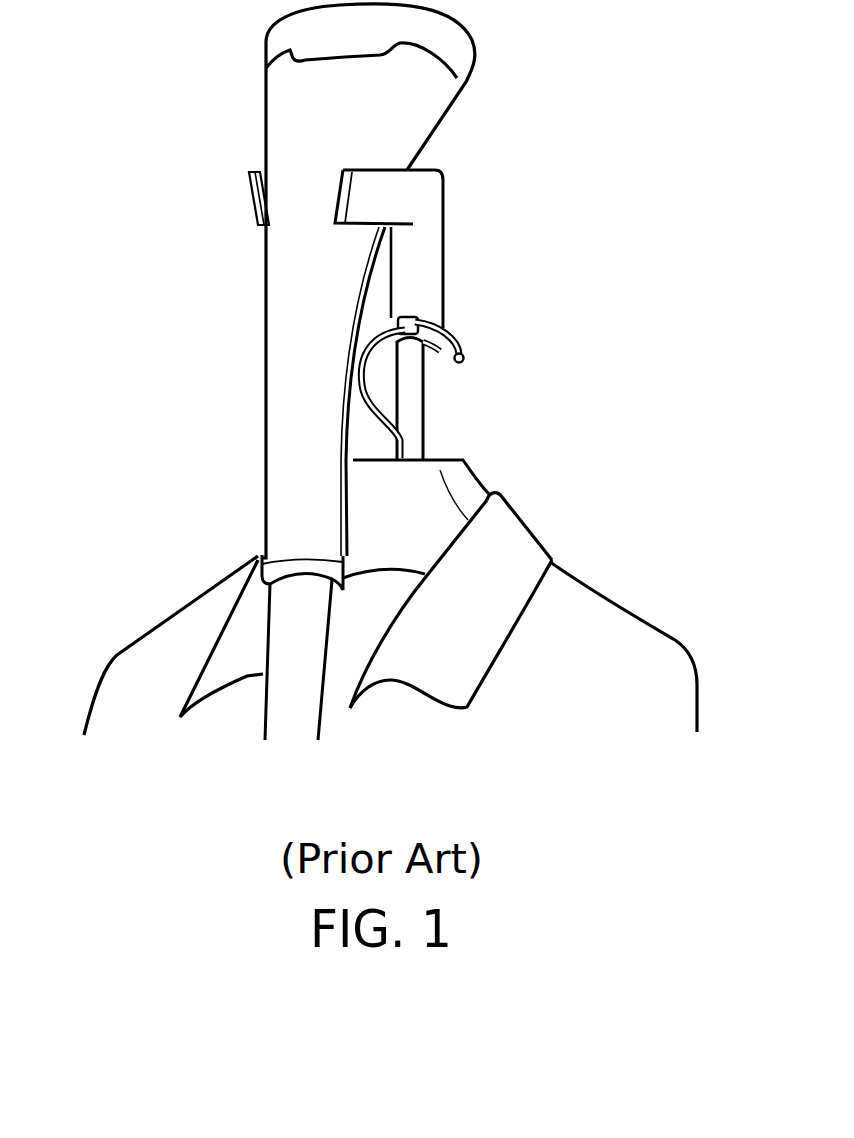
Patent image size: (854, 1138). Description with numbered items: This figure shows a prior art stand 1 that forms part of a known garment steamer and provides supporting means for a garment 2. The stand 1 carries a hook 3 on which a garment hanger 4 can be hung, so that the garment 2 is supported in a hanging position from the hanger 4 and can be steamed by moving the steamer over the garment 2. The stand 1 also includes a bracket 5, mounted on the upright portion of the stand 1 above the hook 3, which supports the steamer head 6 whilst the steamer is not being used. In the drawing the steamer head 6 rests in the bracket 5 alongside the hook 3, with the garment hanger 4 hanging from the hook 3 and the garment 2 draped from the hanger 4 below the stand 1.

The stand 1 is at (133, 123).
The garment 2 is at (668, 655).
The hook 3 is at (418, 317).
The garment hanger 4 is at (512, 527).
The bracket 5 is at (428, 183).
The steamer head 6 is at (283, 89).